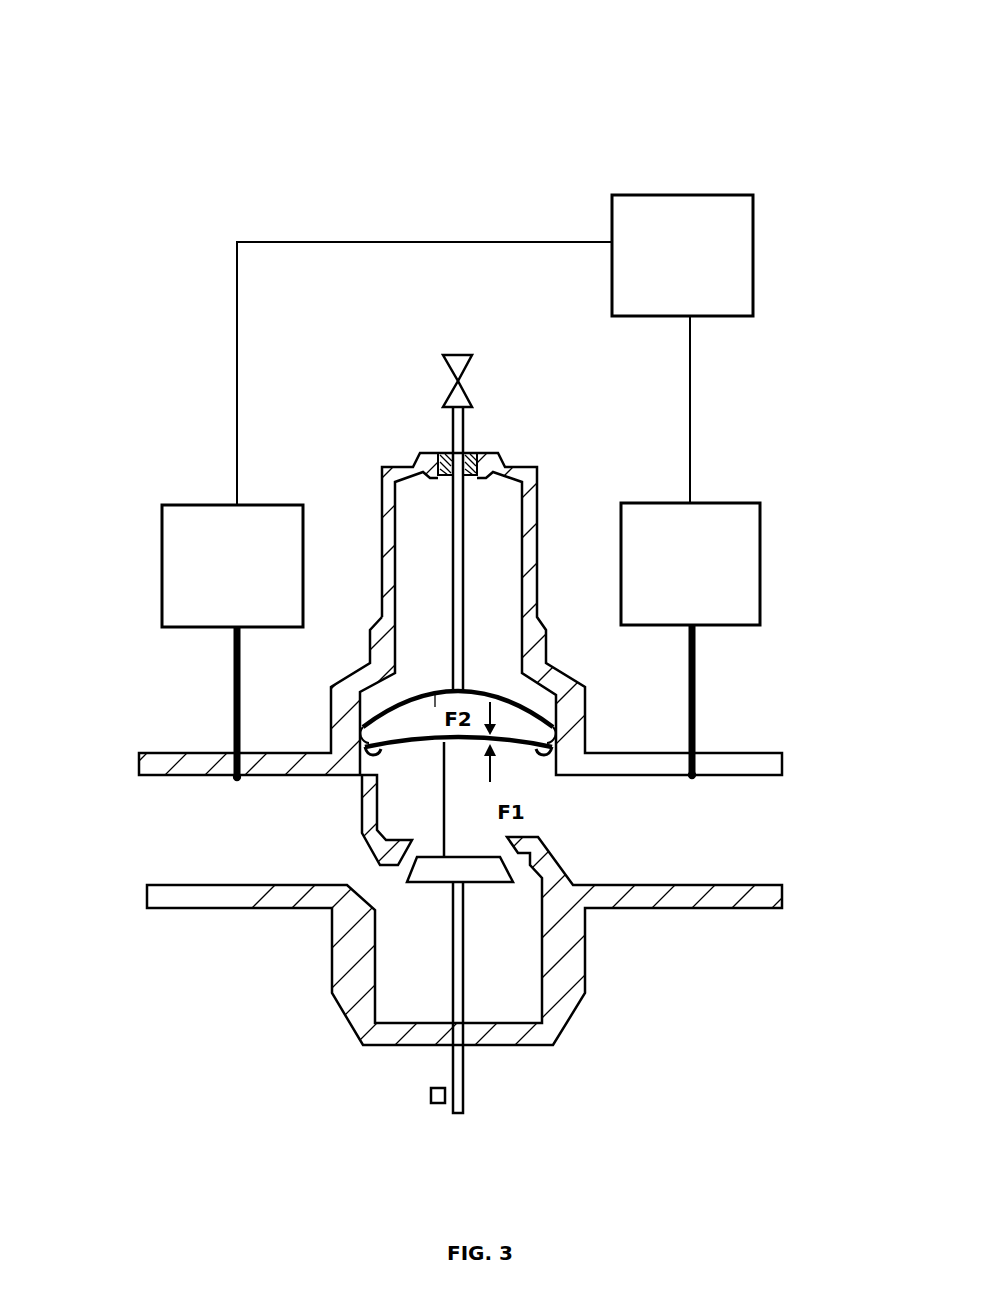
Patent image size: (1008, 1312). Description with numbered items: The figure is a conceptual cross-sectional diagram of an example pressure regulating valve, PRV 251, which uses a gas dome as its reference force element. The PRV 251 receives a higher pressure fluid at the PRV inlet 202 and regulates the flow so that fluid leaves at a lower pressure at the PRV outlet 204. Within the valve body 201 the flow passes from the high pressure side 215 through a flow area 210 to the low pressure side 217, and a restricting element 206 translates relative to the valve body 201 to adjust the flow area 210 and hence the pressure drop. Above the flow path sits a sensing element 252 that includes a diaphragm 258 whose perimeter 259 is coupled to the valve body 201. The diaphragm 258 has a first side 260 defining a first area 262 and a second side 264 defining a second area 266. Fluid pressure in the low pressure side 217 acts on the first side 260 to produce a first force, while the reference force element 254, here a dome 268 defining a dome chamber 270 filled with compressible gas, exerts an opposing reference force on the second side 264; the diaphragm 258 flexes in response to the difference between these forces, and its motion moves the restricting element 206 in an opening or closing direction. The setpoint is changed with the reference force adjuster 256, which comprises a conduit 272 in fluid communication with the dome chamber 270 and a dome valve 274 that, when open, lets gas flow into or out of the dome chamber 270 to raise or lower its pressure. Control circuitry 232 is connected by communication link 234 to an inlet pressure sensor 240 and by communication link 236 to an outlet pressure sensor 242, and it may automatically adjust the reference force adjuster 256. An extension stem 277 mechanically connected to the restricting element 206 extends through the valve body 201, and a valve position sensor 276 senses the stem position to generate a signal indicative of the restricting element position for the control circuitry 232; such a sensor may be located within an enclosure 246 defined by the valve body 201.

The valve body 201 is at (347, 970).
The PRV inlet 202 is at (175, 815).
The PRV outlet 204 is at (750, 817).
The restricting element 206 is at (435, 898).
The flow area 210 is at (410, 862).
The high pressure side 215 is at (275, 855).
The low pressure side 217 is at (672, 852).
The control circuitry 232 is at (682, 255).
The communication link 234 is at (372, 242).
The communication link 236 is at (690, 438).
The inlet pressure sensor 240 is at (232, 643).
The outlet pressure sensor 242 is at (690, 641).
The enclosure 246 is at (400, 522).
The PRV 251 is at (700, 77).
The sensing element 252 is at (405, 752).
The reference force element 254 is at (408, 600).
The reference force adjuster 256 is at (437, 433).
The diaphragm 258 is at (432, 740).
The perimeter 259 is at (365, 735).
The first side 260 is at (527, 768).
The first area 262 is at (523, 757).
The second side 264 is at (512, 727).
The second area 266 is at (586, 690).
The dome 268 is at (472, 690).
The dome chamber 270 is at (435, 707).
The conduit 272 is at (464, 432).
The dome valve 274 is at (468, 370).
The valve position sensor 276 is at (432, 1095).
The extension stem 277 is at (457, 1075).